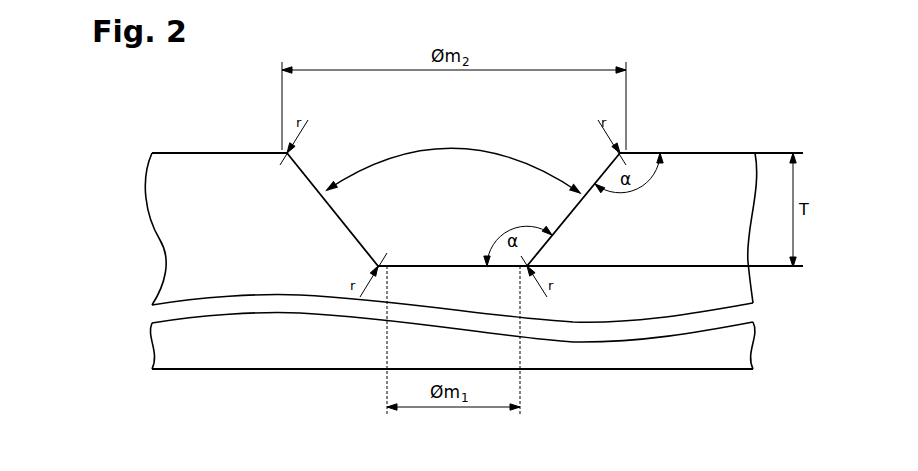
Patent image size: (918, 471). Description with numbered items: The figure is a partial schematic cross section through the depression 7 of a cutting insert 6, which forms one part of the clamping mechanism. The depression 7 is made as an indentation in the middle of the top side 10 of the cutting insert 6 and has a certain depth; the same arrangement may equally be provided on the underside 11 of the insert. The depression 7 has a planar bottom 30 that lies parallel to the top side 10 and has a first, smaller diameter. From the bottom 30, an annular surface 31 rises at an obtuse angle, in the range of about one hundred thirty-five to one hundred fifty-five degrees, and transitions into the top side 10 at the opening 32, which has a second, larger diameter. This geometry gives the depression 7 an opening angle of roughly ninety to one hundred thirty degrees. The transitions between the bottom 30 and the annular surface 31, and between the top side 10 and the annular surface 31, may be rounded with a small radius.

The cutting insert 6 is at (233, 225).
The depression 7 is at (526, 128).
The top side 10 is at (217, 152).
The underside 11 is at (217, 371).
The bottom 30 is at (455, 265).
The annular surface 31 is at (574, 208).
The opening 32 is at (400, 230).